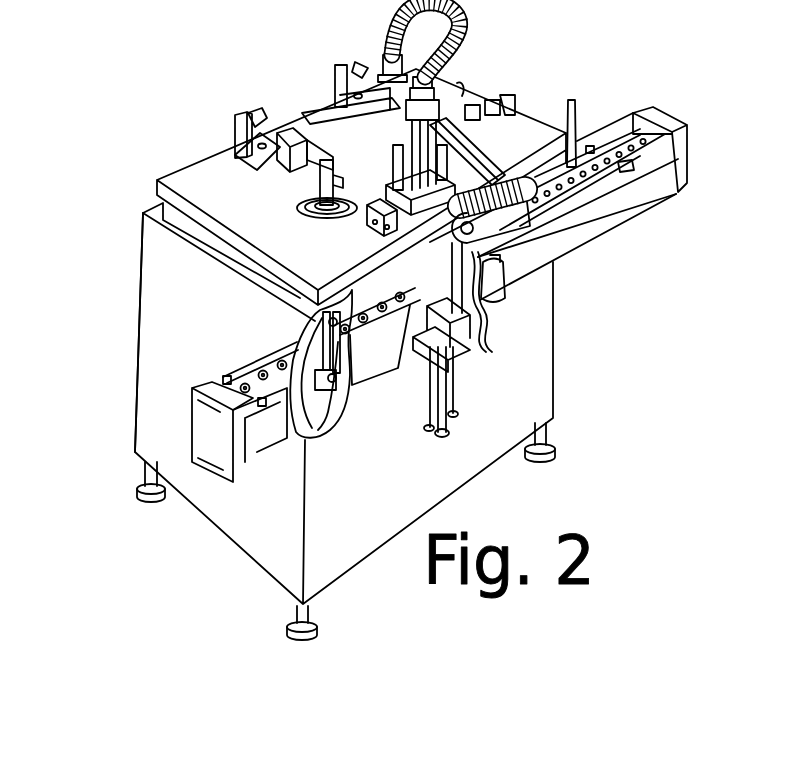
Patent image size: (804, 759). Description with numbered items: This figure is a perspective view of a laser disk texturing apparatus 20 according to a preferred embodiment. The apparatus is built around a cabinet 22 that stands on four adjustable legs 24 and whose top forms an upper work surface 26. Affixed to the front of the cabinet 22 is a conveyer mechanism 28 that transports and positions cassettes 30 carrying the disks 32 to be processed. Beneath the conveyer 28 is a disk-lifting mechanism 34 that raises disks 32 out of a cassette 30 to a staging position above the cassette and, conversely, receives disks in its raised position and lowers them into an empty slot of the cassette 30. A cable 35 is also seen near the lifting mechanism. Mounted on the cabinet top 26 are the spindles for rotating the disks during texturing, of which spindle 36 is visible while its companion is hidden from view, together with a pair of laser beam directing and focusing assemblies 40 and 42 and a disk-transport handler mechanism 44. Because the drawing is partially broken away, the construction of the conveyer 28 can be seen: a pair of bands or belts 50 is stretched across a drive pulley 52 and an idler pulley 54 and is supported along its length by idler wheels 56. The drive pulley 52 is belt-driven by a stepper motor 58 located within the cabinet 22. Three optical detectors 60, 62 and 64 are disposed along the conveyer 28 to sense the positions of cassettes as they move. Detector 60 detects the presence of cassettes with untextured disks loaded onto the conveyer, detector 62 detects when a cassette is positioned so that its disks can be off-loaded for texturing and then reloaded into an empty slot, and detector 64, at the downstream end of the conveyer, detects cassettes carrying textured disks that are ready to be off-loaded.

The laser texturing apparatus 20 is at (138, 364).
The cabinet 22 is at (150, 290).
The adjustable legs 24 is at (137, 489).
The upper work surface 26 is at (177, 183).
The conveyer mechanism 28 is at (638, 224).
The cassettes 30 is at (558, 270).
The disks 32 is at (460, 242).
The disk-lifting mechanism 34 is at (422, 414).
The cable 35 is at (486, 352).
The spindle 36 is at (322, 214).
The laser beam directing and focusing assembly 40 is at (284, 180).
The laser beam directing and focusing assembly 42 is at (383, 65).
The disk-transport (handler) mechanism 44 is at (384, 148).
The bands or belts 50 is at (625, 130).
The drive pulley 52 is at (357, 310).
The idler pulley 54 is at (643, 108).
The idler wheels 56 is at (580, 158).
The stepper motor 58 is at (317, 437).
The optical detector 60 is at (628, 168).
The optical detector 62 is at (497, 295).
The optical detector 64 is at (282, 450).